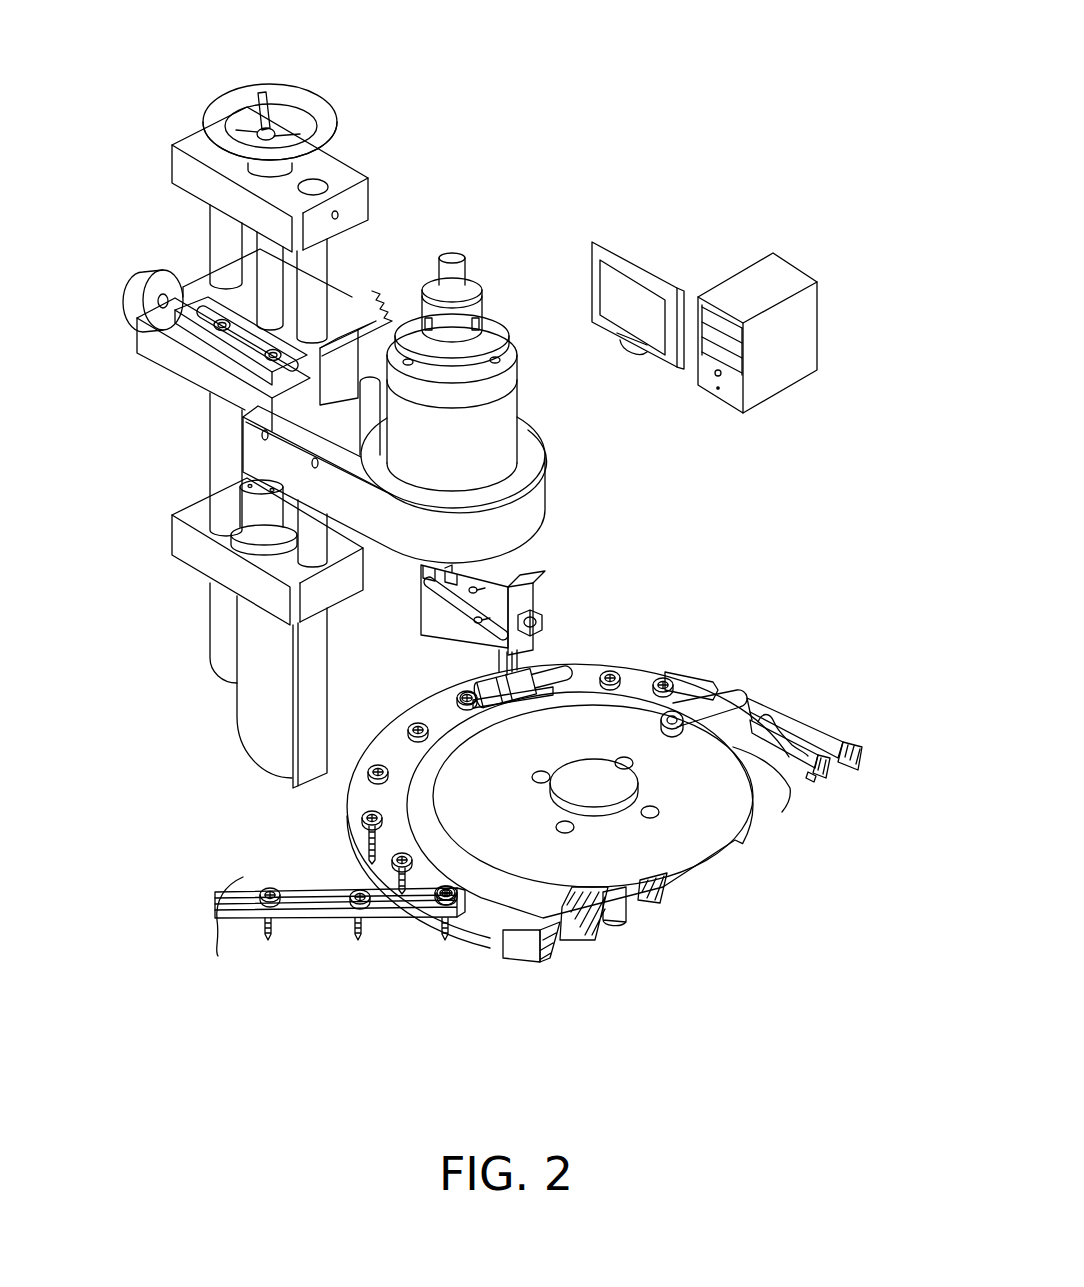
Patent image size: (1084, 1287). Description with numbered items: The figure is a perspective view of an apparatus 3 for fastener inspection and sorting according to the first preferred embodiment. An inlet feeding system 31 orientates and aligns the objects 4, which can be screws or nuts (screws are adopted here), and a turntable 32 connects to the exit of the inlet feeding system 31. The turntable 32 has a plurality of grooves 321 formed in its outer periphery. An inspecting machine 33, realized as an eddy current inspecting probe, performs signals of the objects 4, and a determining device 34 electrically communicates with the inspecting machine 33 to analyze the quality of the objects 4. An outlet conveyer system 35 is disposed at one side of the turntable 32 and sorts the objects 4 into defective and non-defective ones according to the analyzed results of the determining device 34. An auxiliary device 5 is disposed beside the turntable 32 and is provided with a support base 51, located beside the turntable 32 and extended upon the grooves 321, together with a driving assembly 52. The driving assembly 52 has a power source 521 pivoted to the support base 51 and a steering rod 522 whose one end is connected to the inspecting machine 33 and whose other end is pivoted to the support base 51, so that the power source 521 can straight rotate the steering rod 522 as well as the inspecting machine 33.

The apparatus for fastener inspection and sorting 3 is at (692, 121).
The objects 4 is at (269, 887).
The auxiliary device 5 is at (185, 125).
The inlet feeding system 31 is at (326, 921).
The turntable 32 is at (716, 858).
The grooves 321 is at (807, 785).
The inspecting machine 33 is at (530, 677).
The determining device 34 is at (785, 258).
The outlet conveyer system 35 is at (750, 690).
The support base 51 is at (527, 510).
The driving assembly 52 is at (524, 392).
The power source 521 is at (490, 442).
The steering rod 522 is at (493, 648).